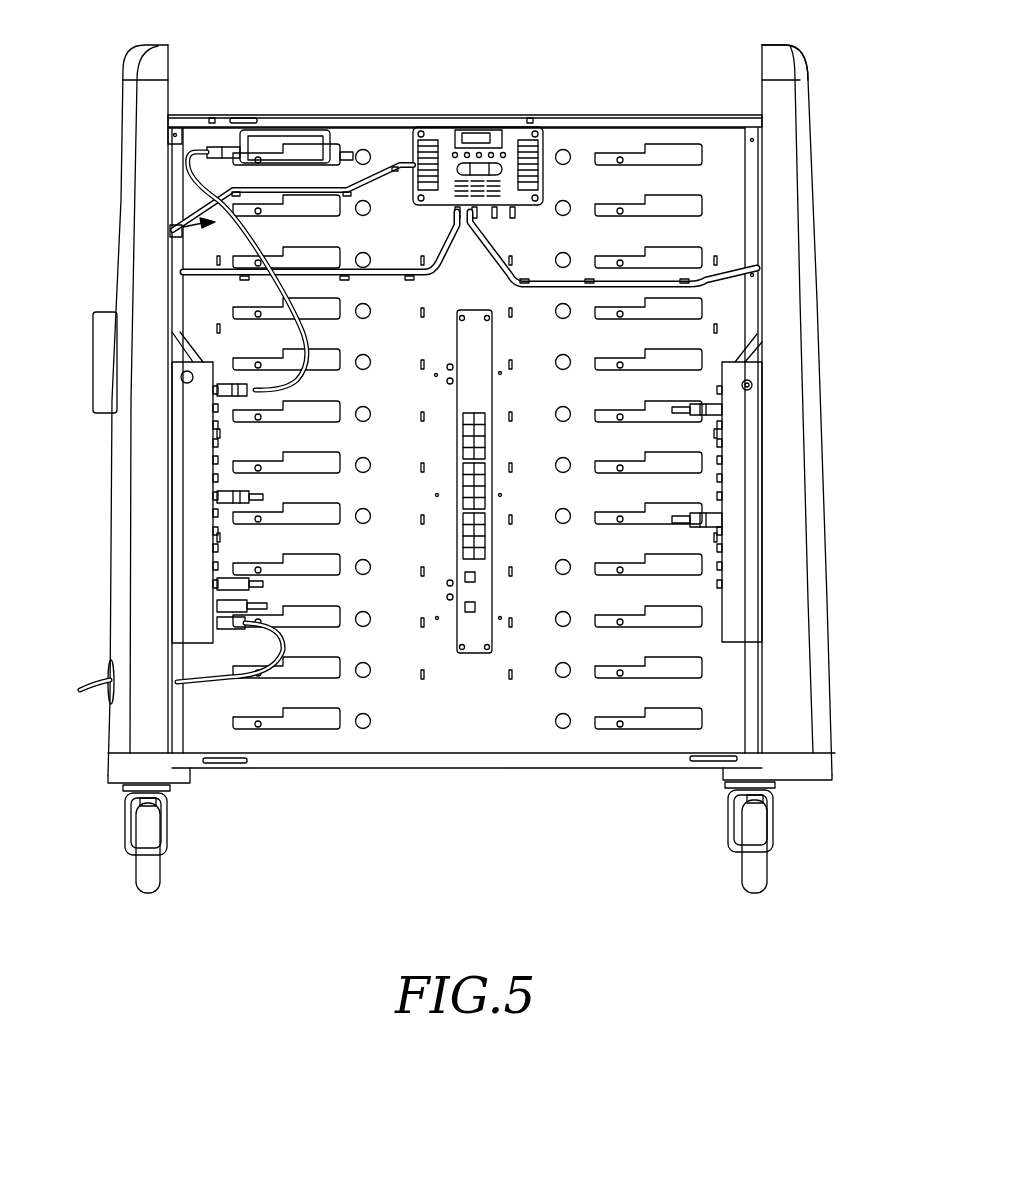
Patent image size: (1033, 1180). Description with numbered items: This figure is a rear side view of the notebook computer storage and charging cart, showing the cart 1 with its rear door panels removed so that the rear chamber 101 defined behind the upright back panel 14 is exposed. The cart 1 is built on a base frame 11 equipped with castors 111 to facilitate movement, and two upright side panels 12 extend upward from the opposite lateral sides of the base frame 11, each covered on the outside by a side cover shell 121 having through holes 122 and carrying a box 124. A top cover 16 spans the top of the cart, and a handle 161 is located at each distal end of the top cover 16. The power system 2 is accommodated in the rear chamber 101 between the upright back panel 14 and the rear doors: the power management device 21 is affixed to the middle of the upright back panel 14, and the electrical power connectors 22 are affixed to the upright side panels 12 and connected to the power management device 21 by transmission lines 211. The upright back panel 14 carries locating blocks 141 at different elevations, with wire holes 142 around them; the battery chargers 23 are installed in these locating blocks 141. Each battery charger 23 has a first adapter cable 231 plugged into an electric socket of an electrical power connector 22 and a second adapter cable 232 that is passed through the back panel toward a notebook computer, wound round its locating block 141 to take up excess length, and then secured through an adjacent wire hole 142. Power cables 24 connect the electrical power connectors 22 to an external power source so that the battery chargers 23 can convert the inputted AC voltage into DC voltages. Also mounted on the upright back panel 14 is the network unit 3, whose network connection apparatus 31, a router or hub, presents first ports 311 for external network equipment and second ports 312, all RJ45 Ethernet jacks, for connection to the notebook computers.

The cart 1 is at (458, 458).
The base frame 11 is at (350, 760).
The castors 111 is at (150, 869).
The upright side panels 12 is at (170, 147).
The side cover shells 121 is at (143, 243).
The through holes 122 is at (105, 680).
The box 124 is at (103, 325).
The upright back panel 14 is at (200, 140).
The locating blocks 141 is at (307, 150).
The wire holes 142 is at (395, 160).
The top cover 16 is at (650, 115).
The handle 161 is at (762, 62).
The rear chamber 101 is at (170, 232).
The power system 2 is at (478, 134).
The power management device 21 is at (437, 137).
The transmission lines 211 is at (213, 259).
The electrical power connectors 22 is at (168, 498).
The battery chargers 23 is at (280, 122).
The first adapter cable 231 is at (193, 178).
The second adapter cable 232 is at (350, 150).
The power cables 24 is at (213, 677).
The network unit 3 is at (489, 596).
The network connection apparatus 31 is at (489, 563).
The first ports 311 is at (453, 594).
The second ports 312 is at (480, 553).